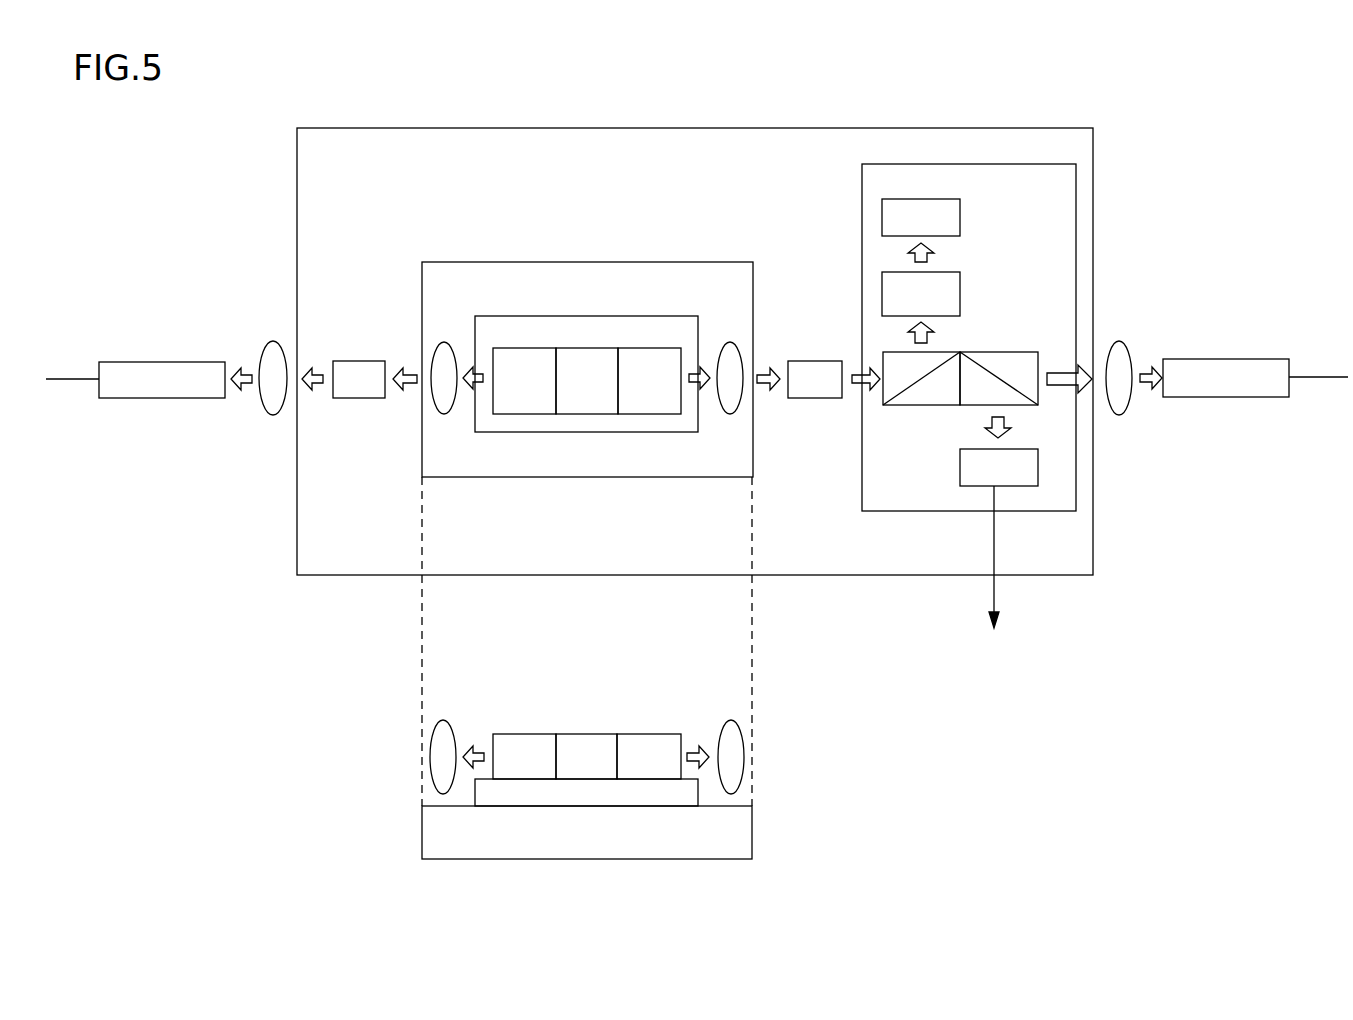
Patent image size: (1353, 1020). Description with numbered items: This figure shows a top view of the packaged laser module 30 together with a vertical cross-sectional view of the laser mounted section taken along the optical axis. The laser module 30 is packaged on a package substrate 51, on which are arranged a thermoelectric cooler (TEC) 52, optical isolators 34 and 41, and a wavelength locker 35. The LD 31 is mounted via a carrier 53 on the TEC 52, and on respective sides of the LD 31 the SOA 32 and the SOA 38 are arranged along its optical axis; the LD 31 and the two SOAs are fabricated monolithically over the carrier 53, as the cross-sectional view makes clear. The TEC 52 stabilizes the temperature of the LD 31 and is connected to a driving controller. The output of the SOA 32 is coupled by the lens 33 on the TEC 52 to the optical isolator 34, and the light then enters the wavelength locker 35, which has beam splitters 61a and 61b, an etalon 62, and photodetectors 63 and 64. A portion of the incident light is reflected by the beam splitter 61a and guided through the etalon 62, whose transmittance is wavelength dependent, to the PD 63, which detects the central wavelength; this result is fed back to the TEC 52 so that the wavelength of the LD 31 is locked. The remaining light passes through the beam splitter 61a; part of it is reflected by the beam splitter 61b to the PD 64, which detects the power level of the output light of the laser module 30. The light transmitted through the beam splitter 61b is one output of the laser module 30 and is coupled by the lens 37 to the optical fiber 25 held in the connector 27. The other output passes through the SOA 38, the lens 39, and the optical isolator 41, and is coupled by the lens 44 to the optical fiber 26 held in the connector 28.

The laser module 30 is at (801, 110).
The package substrate 51 is at (1015, 128).
The wavelength locker 35 is at (1018, 164).
The PD 63 is at (960, 215).
The etalon 62 is at (960, 278).
The beam splitter 61a is at (935, 351).
The beam splitter 61b is at (1022, 351).
The PD 64 is at (960, 467).
The optical isolator 34 is at (815, 361).
The optical fiber 26 is at (72, 377).
The connector 28 is at (165, 362).
The lens 44 is at (273, 341).
The optical isolator 41 is at (358, 361).
The thermoelectric cooler 52 is at (680, 262).
The carrier 53 is at (634, 316).
The SOA 38 is at (523, 414).
The LD 31 is at (585, 414).
The SOA 32 is at (649, 414).
The lens 39 is at (444, 342).
The lens 33 is at (730, 342).
The lens 37 is at (1119, 341).
The connector 27 is at (1226, 359).
The optical fiber 25 is at (1319, 376).